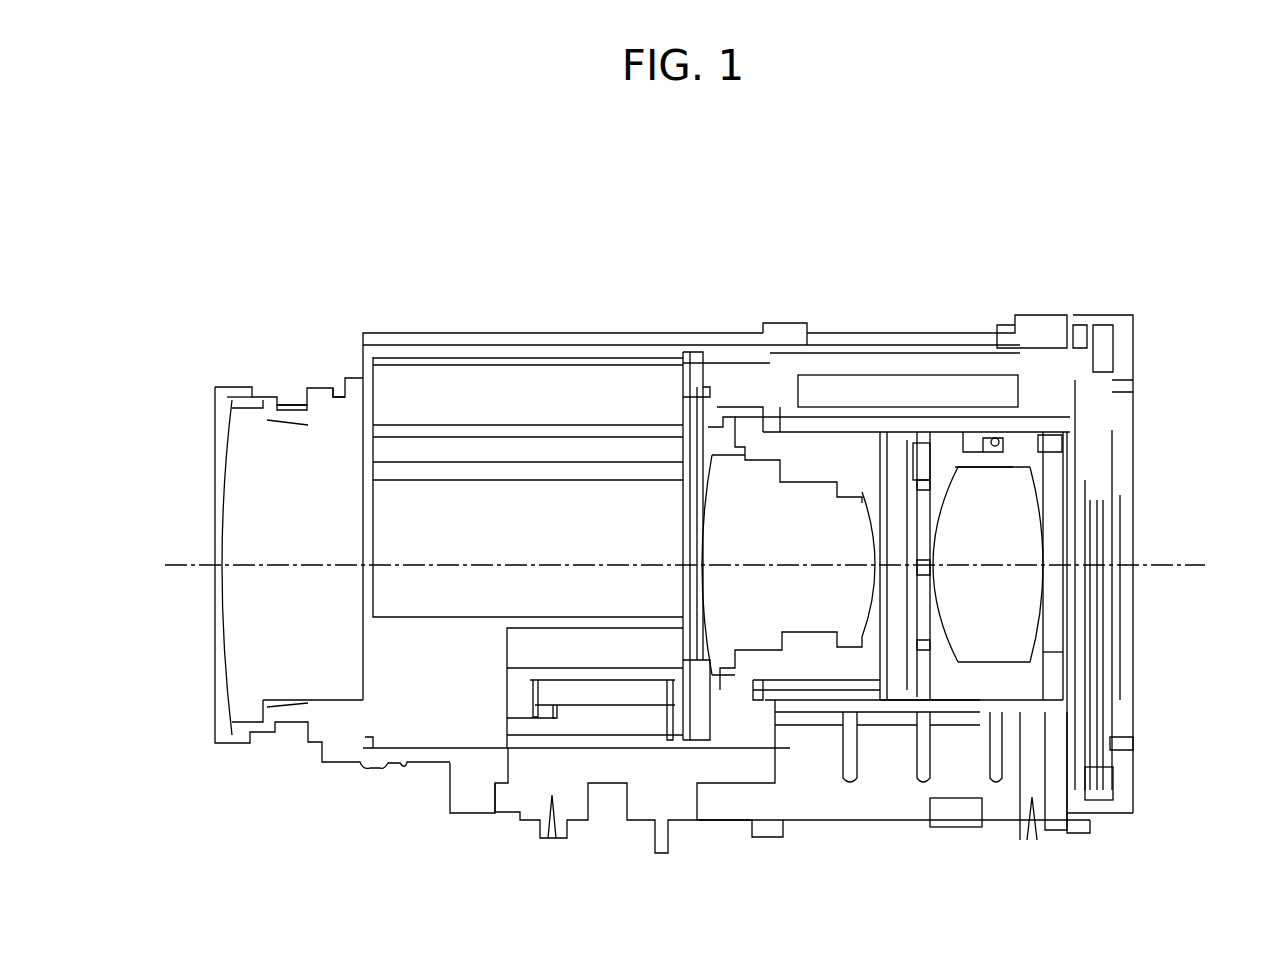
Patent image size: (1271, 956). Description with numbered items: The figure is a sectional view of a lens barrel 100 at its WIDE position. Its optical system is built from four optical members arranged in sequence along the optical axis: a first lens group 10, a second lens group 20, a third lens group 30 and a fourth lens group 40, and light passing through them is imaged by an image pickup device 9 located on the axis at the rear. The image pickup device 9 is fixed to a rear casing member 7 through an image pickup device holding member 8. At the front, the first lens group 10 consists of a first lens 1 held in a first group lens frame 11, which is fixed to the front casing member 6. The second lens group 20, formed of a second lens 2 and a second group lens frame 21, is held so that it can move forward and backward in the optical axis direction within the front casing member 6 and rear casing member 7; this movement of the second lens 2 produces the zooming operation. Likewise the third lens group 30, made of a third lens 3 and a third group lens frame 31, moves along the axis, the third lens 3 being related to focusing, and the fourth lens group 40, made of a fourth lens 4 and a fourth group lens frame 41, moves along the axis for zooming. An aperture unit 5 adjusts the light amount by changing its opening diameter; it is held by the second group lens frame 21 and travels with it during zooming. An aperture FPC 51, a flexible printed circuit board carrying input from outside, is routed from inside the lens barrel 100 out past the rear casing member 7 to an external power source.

The lens barrel 100 is at (200, 141).
The first lens group 10 is at (255, 213).
The first lens 1 is at (253, 437).
The first group lens frame 11 is at (312, 407).
The front casing member 6 is at (560, 333).
The aperture unit 5 is at (695, 397).
The second lens group 20 is at (668, 213).
The second lens 2 is at (745, 480).
The second group lens frame 21 is at (797, 467).
The rear casing member 7 is at (823, 337).
The aperture FPC 51 is at (862, 382).
The third lens group 30 is at (1020, 213).
The third group lens frame 31 is at (892, 450).
The third lens 3 is at (898, 513).
The fourth lens group 40 is at (1140, 213).
The fourth group lens frame 41 is at (975, 440).
The fourth lens 4 is at (1013, 478).
The image pickup device holding member 8 is at (1125, 404).
The image pickup device 9 is at (1127, 510).